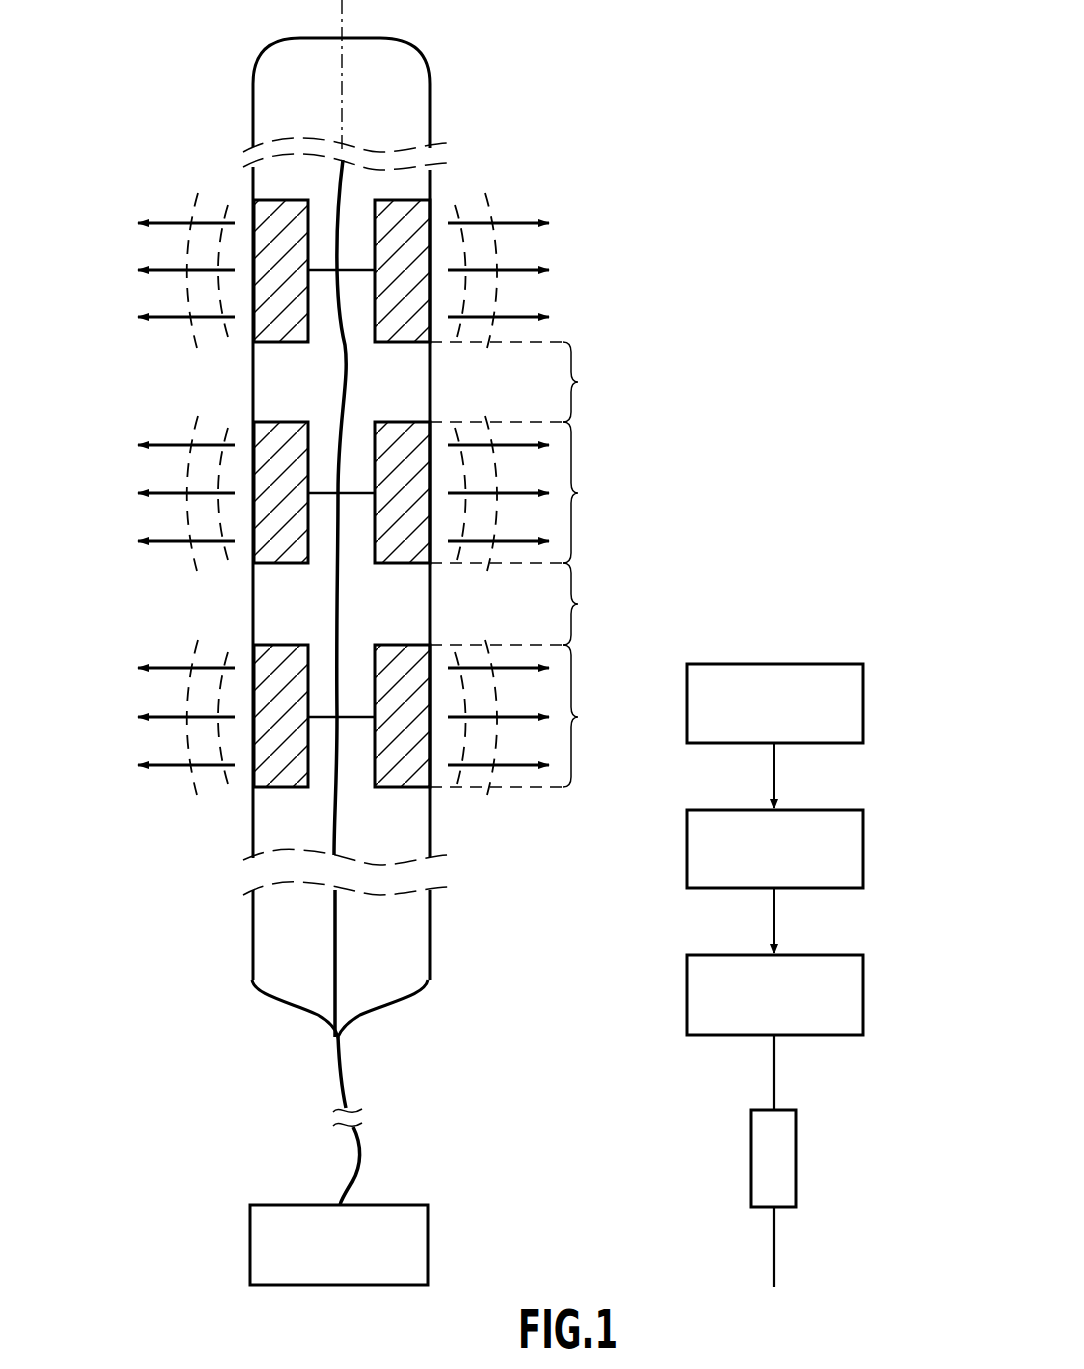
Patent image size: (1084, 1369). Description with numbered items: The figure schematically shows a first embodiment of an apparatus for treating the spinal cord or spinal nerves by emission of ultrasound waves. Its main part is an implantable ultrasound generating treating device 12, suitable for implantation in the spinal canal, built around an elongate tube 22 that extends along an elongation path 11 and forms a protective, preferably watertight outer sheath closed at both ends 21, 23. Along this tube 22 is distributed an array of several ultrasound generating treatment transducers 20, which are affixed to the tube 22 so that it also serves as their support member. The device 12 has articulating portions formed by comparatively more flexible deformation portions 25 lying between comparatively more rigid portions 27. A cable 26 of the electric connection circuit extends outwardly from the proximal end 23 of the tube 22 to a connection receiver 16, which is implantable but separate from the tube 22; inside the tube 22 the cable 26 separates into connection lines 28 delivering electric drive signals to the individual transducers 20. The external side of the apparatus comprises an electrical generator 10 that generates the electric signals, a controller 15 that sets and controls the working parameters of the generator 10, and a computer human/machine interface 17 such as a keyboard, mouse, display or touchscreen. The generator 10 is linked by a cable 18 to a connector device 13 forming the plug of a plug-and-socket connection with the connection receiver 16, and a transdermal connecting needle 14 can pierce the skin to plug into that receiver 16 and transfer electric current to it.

The electrical generator 10 is at (789, 1009).
The elongation path 11 is at (347, 4).
The implantable ultrasound generating treating device 12 is at (240, 192).
The connector device 13 is at (797, 1160).
The connecting needle 14 is at (775, 1245).
The controller 15 is at (789, 864).
The connection receiver 16 is at (354, 1259).
The computer human/machine interface 17 is at (789, 719).
The cable 18 is at (775, 1070).
The ultrasound generating treatment transducers 20 is at (287, 328).
The end of the elongate tube 21 is at (404, 47).
The elongate tube 22 is at (249, 386).
The proximal end of the elongate tube 23 is at (382, 1005).
The flexible deformation portion 25 is at (589, 493).
The cable 26 is at (344, 1069).
The rigid portion 27 is at (589, 604).
The connection lines 28 is at (320, 497).